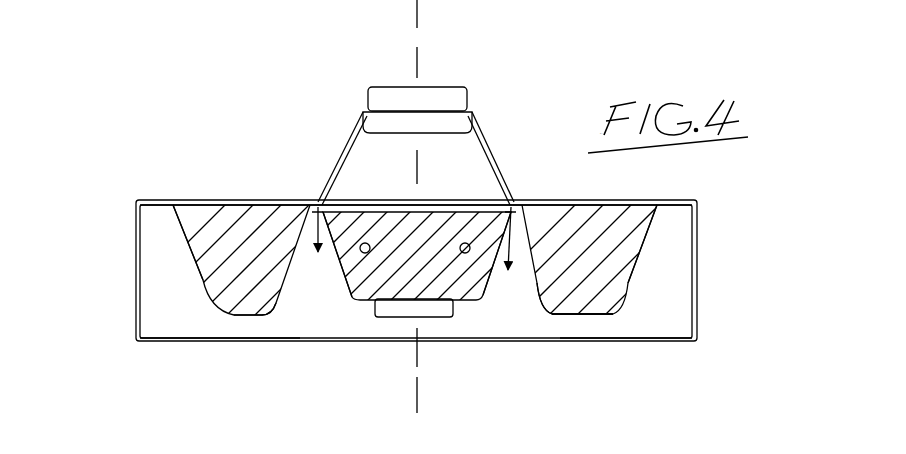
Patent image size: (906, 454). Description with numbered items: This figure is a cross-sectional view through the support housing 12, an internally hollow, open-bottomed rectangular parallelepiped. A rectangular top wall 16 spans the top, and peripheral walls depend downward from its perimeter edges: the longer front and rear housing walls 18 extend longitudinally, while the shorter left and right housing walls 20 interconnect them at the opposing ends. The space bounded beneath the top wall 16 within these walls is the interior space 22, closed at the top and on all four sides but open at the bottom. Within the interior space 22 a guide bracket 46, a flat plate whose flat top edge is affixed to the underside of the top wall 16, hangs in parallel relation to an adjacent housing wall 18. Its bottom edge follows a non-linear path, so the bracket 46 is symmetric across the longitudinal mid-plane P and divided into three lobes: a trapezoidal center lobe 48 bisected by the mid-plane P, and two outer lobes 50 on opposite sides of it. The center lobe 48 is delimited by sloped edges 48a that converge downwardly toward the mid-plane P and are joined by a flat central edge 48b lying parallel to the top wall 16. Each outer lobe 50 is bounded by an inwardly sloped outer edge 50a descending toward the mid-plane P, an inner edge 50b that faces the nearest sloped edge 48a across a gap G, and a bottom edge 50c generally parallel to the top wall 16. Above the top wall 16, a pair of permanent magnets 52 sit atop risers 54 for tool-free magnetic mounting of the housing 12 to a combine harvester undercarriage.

The support housing 12 is at (703, 208).
The top wall 16 is at (165, 200).
The front and rear housing walls 18 is at (134, 279).
The left and right housing walls 20 is at (650, 325).
The interior space 22 is at (177, 318).
The guide bracket 46 is at (580, 316).
The center lobe 48 is at (400, 220).
The sloped edges 48a is at (349, 260).
The flat central edge 48b is at (377, 302).
The outer lobes 50 is at (228, 230).
The outer edge 50a is at (202, 282).
The inner edge 50b is at (287, 290).
The bottom edge 50c is at (260, 303).
The permanent magnets 52 is at (440, 96).
The risers 54 is at (486, 128).
The gap G is at (309, 207).
The longitudinal mid-plane P is at (420, 57).